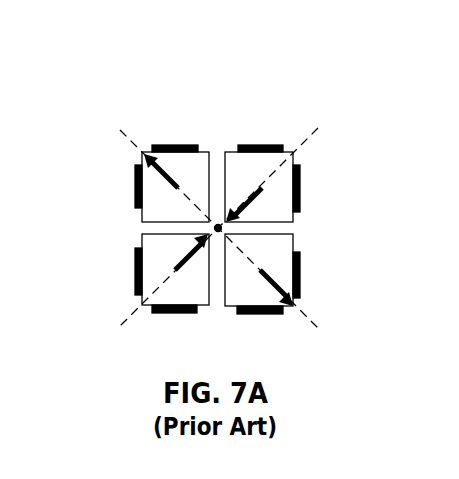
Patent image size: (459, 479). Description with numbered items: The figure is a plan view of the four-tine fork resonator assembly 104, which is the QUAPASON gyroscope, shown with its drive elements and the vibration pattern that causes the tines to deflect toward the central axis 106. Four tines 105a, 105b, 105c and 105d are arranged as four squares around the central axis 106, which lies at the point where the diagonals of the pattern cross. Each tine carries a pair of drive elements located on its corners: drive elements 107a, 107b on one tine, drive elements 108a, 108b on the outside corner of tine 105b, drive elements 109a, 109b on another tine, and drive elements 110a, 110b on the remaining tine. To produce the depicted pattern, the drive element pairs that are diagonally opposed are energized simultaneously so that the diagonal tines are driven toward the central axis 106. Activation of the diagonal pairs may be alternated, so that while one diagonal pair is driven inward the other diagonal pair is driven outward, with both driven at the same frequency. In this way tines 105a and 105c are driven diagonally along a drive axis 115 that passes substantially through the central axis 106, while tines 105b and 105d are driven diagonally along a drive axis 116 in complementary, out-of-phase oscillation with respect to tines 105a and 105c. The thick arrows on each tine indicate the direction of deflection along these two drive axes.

The 4-tine fork resonator assembly 104 is at (66, 52).
The tine 105a is at (293, 242).
The tine 105b is at (142, 240).
The tine 105c is at (142, 213).
The tine 105d is at (293, 218).
The central axis 106 is at (218, 225).
The drive element 107a is at (300, 290).
The drive element 107b is at (275, 336).
The drive element 108a is at (160, 315).
The drive element 108b is at (135, 270).
The drive element 109a is at (135, 178).
The drive element 109b is at (170, 145).
The drive element 110a is at (265, 145).
The drive element 110b is at (300, 178).
The drive axis 115 is at (319, 328).
The drive axis 116 is at (126, 318).